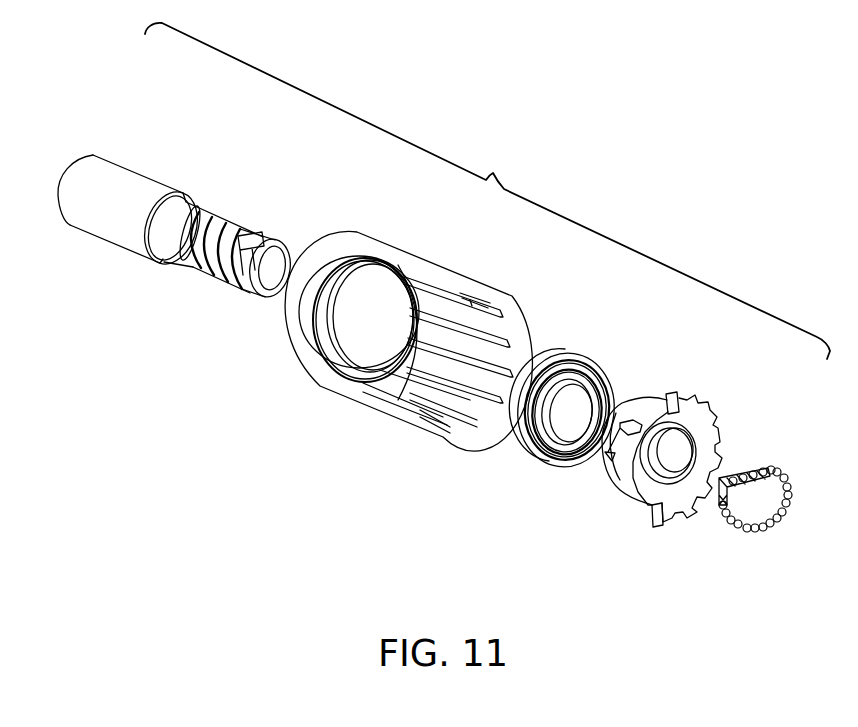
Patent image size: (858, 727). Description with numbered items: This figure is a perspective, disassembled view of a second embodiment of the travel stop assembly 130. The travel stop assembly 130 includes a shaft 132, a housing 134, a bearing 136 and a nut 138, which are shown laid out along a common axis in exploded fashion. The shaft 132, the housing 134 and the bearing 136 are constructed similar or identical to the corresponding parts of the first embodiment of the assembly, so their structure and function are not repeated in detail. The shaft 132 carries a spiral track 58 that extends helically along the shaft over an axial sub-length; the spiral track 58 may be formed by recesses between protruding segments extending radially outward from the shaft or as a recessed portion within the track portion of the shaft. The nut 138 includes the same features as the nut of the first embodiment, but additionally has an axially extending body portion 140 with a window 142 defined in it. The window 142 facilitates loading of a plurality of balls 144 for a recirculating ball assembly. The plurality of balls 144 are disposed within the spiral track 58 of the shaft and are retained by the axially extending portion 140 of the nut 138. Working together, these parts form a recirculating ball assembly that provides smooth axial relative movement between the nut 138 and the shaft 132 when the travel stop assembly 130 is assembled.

The travel stop assembly 130 is at (487, 191).
The shaft 132 is at (133, 190).
The spiral track 58 is at (228, 215).
The housing 134 is at (379, 259).
The bearing 136 is at (550, 351).
The nut 138 is at (620, 506).
The axially extending body portion 140 is at (655, 408).
The window 142 is at (632, 415).
The plurality of balls 144 is at (750, 553).